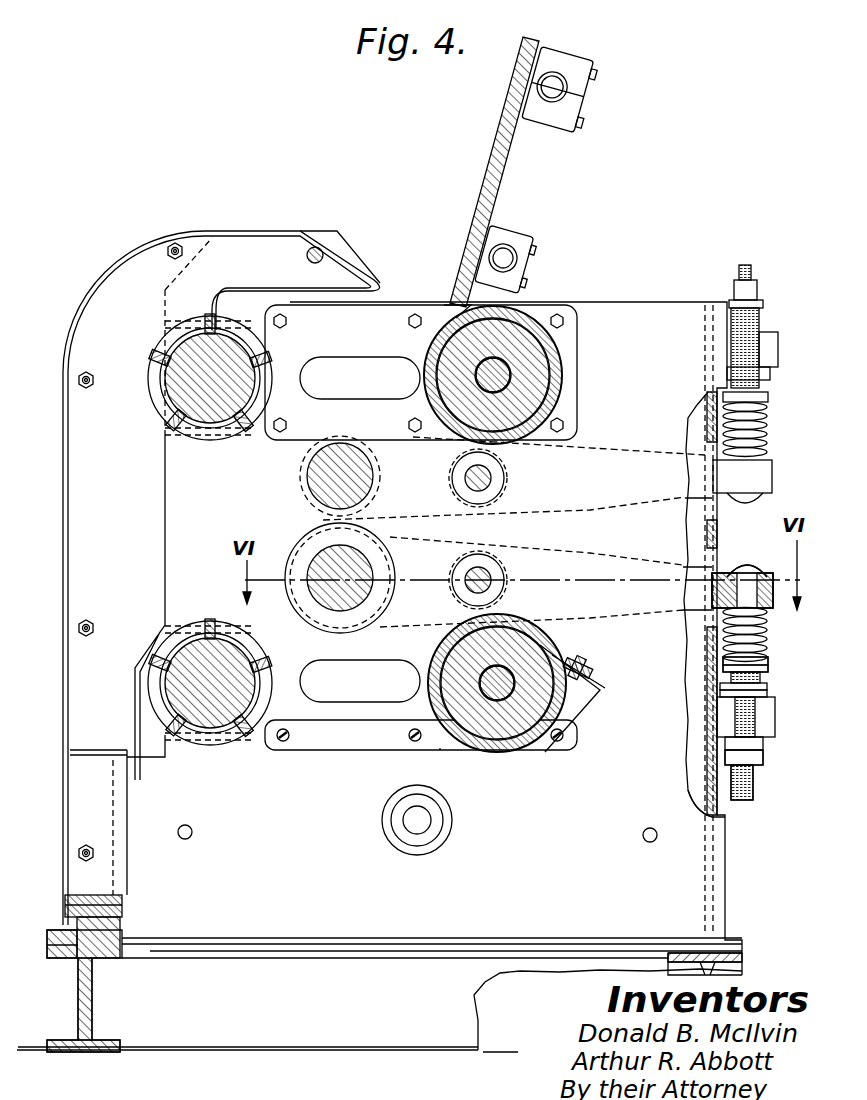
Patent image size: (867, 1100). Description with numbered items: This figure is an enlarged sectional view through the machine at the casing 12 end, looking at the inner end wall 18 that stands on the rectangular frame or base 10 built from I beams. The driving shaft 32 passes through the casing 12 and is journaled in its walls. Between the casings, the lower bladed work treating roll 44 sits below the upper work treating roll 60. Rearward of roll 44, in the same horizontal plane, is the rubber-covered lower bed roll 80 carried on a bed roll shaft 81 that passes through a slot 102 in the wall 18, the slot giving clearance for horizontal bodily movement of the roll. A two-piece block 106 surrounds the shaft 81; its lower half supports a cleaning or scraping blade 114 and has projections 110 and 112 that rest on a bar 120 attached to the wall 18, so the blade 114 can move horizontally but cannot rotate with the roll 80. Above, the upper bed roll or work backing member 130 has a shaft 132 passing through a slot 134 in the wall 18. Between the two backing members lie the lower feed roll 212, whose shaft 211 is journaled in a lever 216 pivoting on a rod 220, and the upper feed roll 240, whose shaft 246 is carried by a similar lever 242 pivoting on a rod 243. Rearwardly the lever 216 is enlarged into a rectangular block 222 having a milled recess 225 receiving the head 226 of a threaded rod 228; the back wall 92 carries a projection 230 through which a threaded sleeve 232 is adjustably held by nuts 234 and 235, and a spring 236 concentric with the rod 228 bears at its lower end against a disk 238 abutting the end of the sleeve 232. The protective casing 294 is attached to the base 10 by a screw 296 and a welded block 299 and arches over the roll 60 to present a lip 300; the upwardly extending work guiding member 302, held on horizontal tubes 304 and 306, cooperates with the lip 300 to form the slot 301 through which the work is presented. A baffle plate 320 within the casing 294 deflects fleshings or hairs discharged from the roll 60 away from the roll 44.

The frame or base 10 is at (209, 1030).
The casing 12 is at (732, 868).
The inner end wall 18 is at (686, 893).
The shaft 32 is at (432, 820).
The lower bladed work treating roll 44 is at (245, 742).
The upper work treating roll 60 is at (225, 438).
The lower bed roll 80 is at (540, 648).
The bed roll shaft 81 is at (497, 752).
The back wall 92 is at (730, 795).
The slot 102 is at (358, 674).
The two-piece block 106 is at (450, 643).
The projection 110 is at (440, 750).
The projection 112 is at (569, 729).
The cleaning or scraping blade 114 is at (588, 674).
The bar 120 is at (548, 752).
The upper bed roll or work backing member 130 is at (545, 372).
The shaft 132 is at (513, 380).
The slot 134 is at (364, 368).
The shaft 211 is at (408, 578).
The lower feed roll 212 is at (303, 600).
The lever 216 is at (640, 528).
The rod 220 is at (492, 578).
The rectangular block 222 is at (755, 608).
The milled recess 225 is at (738, 568).
The head 226 is at (768, 564).
The threaded rod 228 is at (752, 788).
The projection 230 is at (773, 722).
The threaded sleeve 232 is at (730, 696).
The nut 234 is at (725, 709).
The nut 235 is at (758, 754).
The spring 236 is at (755, 668).
The disk 238 is at (725, 674).
The upper feed roll 240 is at (305, 482).
The lever 242 is at (706, 470).
The rod 243 is at (492, 478).
The shaft 246 is at (373, 480).
The casing 294 is at (80, 558).
The screw 296 is at (103, 894).
The block 299 is at (118, 934).
The lip 300 is at (420, 290).
The slot 301 is at (446, 277).
The work guiding member 302 is at (492, 145).
The horizontal tube 304 is at (568, 90).
The horizontal tube 306 is at (520, 262).
The baffle plate 320 is at (148, 646).